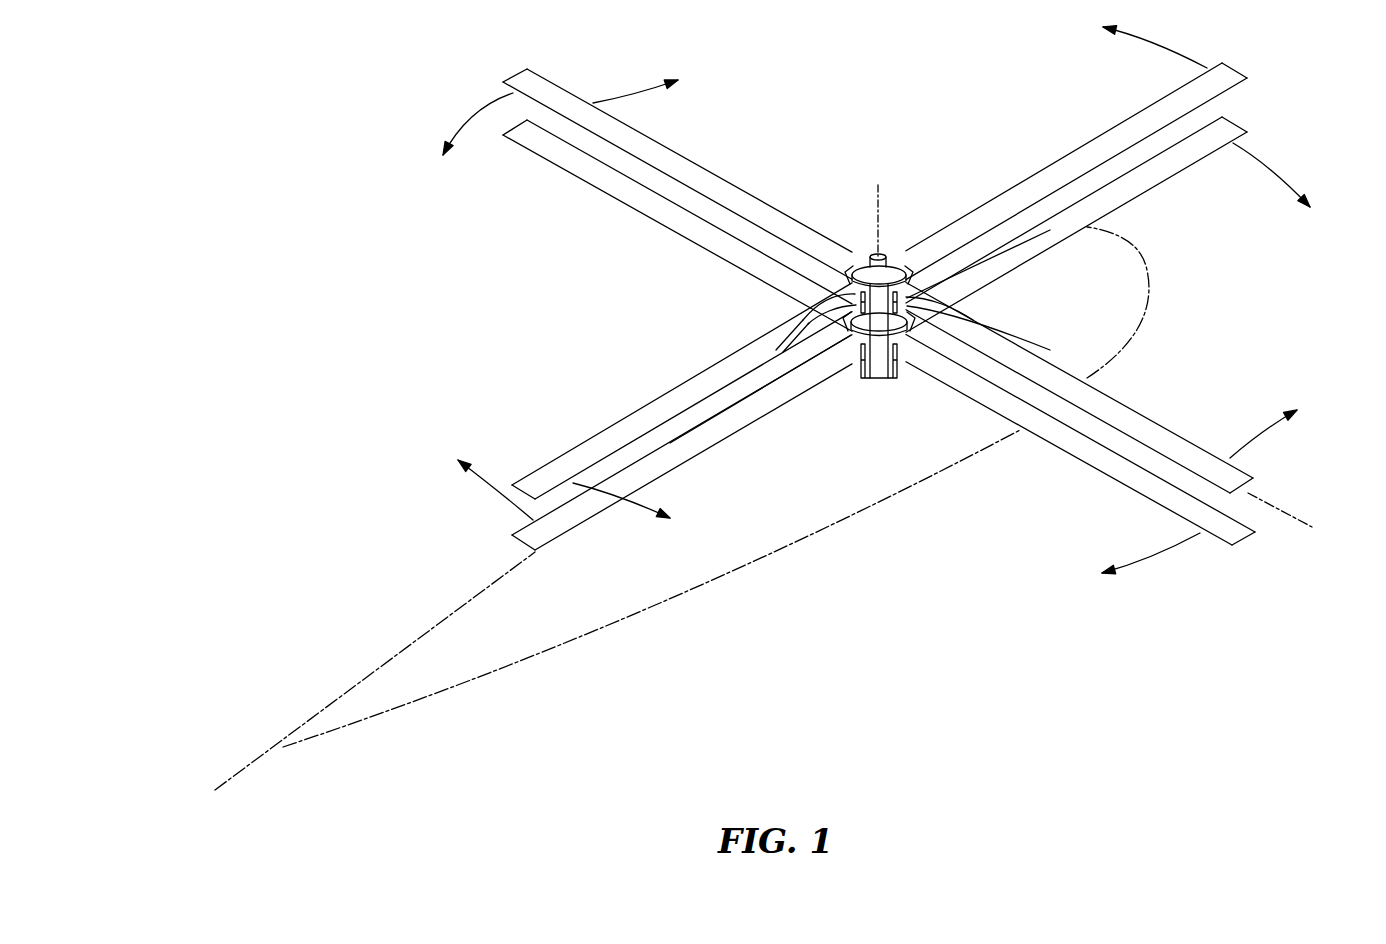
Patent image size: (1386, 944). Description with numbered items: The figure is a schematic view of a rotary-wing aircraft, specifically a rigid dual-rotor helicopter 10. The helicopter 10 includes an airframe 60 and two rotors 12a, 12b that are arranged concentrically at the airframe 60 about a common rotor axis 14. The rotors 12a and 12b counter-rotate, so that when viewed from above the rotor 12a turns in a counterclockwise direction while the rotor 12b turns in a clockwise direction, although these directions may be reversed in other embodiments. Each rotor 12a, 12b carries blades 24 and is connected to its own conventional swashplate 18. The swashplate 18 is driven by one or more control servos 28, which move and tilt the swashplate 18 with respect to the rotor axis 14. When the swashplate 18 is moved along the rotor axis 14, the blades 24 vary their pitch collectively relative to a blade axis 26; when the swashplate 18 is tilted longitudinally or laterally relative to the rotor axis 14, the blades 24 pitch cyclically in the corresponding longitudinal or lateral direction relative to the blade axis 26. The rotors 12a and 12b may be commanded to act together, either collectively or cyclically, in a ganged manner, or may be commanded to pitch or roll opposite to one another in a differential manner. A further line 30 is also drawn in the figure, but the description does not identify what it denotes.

The helicopter 10 is at (352, 153).
The rotor 12a is at (684, 159).
The rotor 12b is at (608, 199).
The rotor axis 14 is at (873, 207).
The swashplate 18 is at (888, 262).
The blades 24 is at (552, 88).
The blade axis 26 is at (1293, 514).
The control servos 28 is at (803, 319).
The sweep line 30 is at (270, 755).
The airframe 60 is at (707, 578).